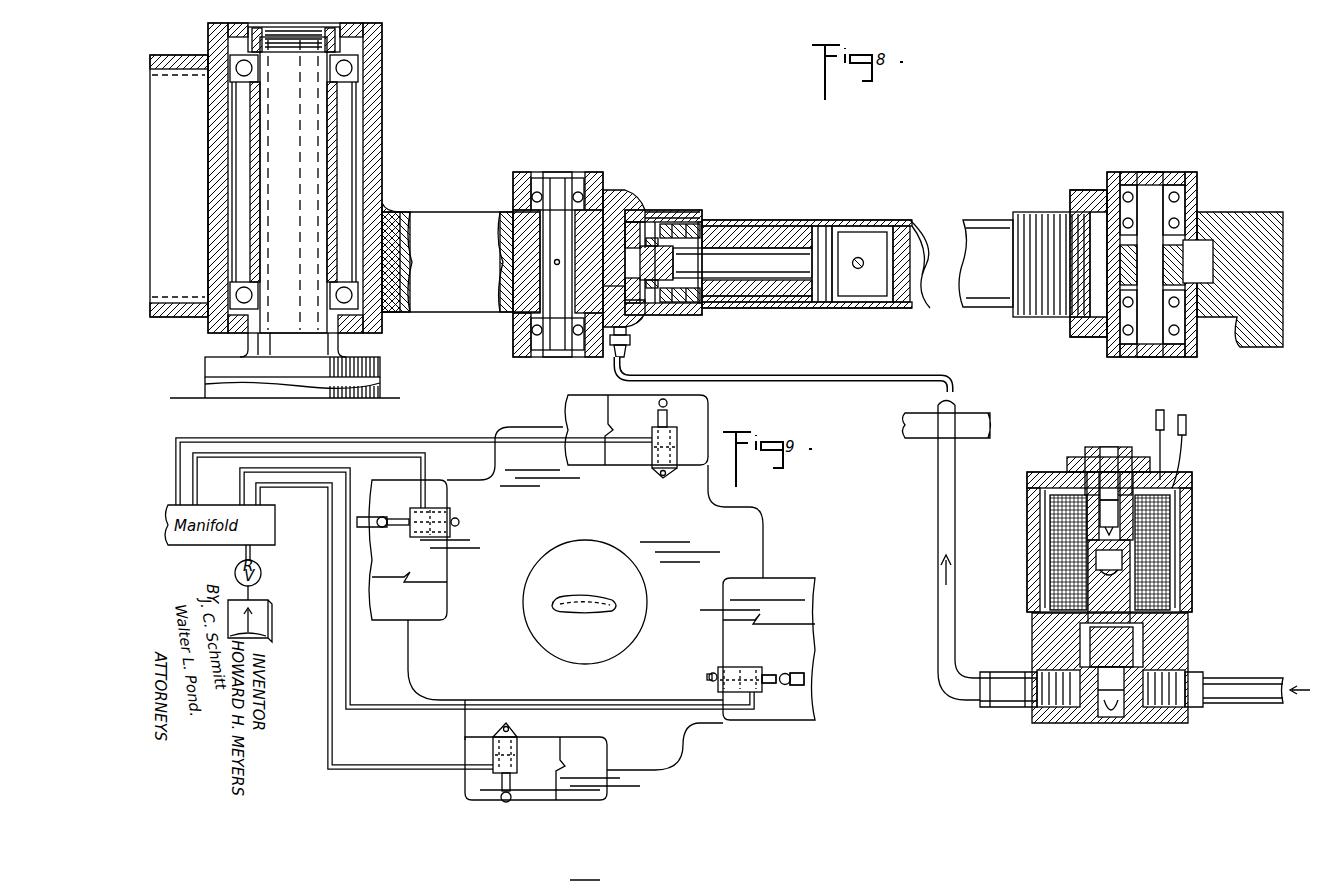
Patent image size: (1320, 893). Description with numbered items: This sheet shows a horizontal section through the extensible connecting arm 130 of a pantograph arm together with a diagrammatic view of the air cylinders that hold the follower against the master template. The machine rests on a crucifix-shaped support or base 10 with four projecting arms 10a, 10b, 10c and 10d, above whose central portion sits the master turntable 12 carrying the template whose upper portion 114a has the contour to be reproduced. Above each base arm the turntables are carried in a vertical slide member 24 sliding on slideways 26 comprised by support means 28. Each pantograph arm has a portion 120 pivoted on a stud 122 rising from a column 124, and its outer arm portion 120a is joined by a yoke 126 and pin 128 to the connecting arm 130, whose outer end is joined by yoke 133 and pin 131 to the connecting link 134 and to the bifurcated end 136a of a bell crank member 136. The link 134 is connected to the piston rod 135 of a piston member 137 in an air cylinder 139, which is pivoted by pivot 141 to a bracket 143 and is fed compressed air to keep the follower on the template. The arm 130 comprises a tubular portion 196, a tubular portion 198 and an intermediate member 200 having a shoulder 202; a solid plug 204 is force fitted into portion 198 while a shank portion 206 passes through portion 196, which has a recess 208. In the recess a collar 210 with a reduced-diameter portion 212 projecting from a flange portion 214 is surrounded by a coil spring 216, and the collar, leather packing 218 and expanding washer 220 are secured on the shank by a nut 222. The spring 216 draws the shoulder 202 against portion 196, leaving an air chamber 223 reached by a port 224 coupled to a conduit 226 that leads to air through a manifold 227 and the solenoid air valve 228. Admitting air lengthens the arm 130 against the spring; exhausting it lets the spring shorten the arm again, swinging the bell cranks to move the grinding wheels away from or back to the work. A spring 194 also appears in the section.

In FIG. 8, the support or base 10 is at (395, 397).
In FIG. 9, the support or base 10 is at (765, 555).
In FIG. 9, the projecting arm 10a is at (792, 607).
In FIG. 9, the projecting arm 10b is at (711, 418).
In FIG. 9, the projecting arm 10c is at (394, 626).
In FIG. 9, the projecting arm 10d is at (612, 785).
In FIG. 9, the master turntable 12 is at (627, 572).
In FIG. 9, the vertical slide member 24 is at (563, 410).
In FIG. 9, the slideways 26 is at (745, 618).
In FIG. 9, the support means 28 is at (415, 504).
In FIG. 9, the upper portion of master template 114a is at (578, 590).
In FIG. 8, the pantograph arm portion 120 is at (190, 191).
In FIG. 8, the arm portion 120a is at (468, 272).
In FIG. 8, the stud 122 is at (312, 132).
In FIG. 8, the column 124 is at (340, 352).
In FIG. 8, the yoke 126 is at (612, 185).
In FIG. 8, the pin 128 is at (548, 237).
In FIG. 8, the connecting arm 130 is at (968, 218).
In FIG. 8, the pin 131 is at (1148, 172).
In FIG. 8, the yoke 133 is at (1084, 190).
In FIG. 8, the connecting link 134 is at (1205, 245).
In FIG. 9, the connecting link 134 is at (806, 680).
In FIG. 9, the piston rod 135 is at (770, 692).
In FIG. 8, the bell crank member 136 is at (1270, 277).
In FIG. 8, the bifurcated end 136a is at (1092, 325).
In FIG. 9, the piston member 137 is at (735, 666).
In FIG. 9, the air cylinder 139 is at (660, 470).
In FIG. 9, the pivot 141 is at (709, 675).
In FIG. 9, the bracket 143 is at (713, 682).
In FIG. 8, the spring 194 is at (1022, 212).
In FIG. 8, the tubular portion 196 is at (808, 225).
In FIG. 8, the tubular portion 198 is at (858, 226).
In FIG. 8, the intermediate member 200 is at (836, 302).
In FIG. 8, the shoulder 202 is at (818, 303).
In FIG. 8, the solid plug 204 is at (900, 302).
In FIG. 8, the shank portion 206 is at (765, 240).
In FIG. 8, the recess 208 is at (712, 310).
In FIG. 8, the collar 210 is at (672, 310).
In FIG. 8, the portion of reduced diameter 212 is at (702, 224).
In FIG. 8, the flange portion 214 is at (672, 222).
In FIG. 8, the coil spring 216 is at (745, 248).
In FIG. 8, the leather packing 218 is at (662, 210).
In FIG. 8, the expanding washer 220 is at (640, 312).
In FIG. 8, the nut 222 is at (673, 262).
In FIG. 8, the air chamber 223 is at (640, 205).
In FIG. 8, the port 224 is at (622, 296).
In FIG. 8, the conduit 226 is at (862, 378).
In FIG. 8, the manifold 227 is at (990, 425).
In FIG. 8, the solenoid air valve 228 is at (1196, 555).